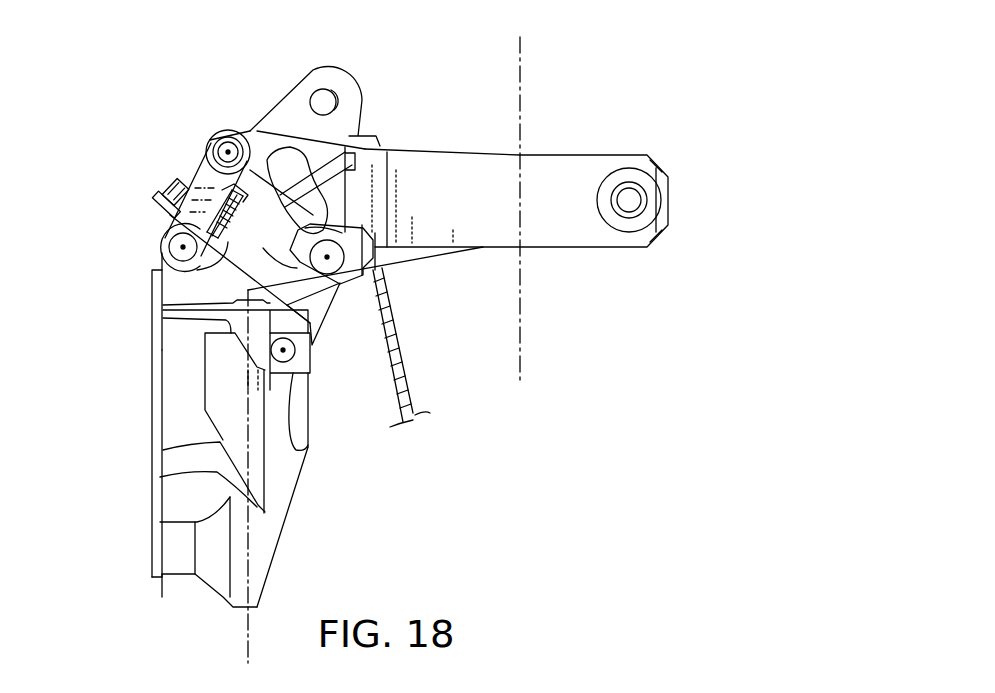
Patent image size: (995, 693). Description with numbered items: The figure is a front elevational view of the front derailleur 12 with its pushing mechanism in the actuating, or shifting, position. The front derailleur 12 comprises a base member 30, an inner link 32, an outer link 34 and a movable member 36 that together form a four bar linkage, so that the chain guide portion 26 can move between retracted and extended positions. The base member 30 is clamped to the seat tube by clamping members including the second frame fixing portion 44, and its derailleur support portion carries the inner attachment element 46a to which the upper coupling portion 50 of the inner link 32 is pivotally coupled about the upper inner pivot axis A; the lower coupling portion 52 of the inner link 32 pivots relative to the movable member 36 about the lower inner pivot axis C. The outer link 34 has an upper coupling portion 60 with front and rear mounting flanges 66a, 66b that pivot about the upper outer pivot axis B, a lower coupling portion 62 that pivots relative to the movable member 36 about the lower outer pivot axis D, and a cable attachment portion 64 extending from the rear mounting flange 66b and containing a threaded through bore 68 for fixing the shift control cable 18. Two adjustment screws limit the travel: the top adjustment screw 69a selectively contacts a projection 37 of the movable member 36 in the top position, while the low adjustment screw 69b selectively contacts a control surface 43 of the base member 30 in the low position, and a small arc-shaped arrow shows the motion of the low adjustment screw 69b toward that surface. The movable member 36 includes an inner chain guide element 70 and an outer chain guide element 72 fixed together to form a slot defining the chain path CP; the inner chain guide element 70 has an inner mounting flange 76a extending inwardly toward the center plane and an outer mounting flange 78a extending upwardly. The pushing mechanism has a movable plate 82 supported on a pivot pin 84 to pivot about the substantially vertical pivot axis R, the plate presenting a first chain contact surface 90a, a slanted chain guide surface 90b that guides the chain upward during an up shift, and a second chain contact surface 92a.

The front derailleur 12 is at (553, 97).
The shift control cable 18 is at (407, 357).
The chain guide portion 26 is at (273, 573).
The base member 30 is at (623, 138).
The inner link 32 is at (337, 337).
The outer link 34 is at (205, 145).
The movable member 36 is at (313, 478).
The projection 37 is at (165, 258).
The control surface 43 is at (305, 228).
The second frame fixing portion 44 is at (565, 218).
The inner attachment element 46a is at (243, 221).
The upper coupling portion 50 is at (346, 272).
The lower coupling portion 52 is at (313, 342).
The upper coupling portion 60 is at (222, 132).
The lower coupling portion 62 is at (170, 222).
The cable attachment portion 64 is at (310, 70).
The front mounting flange 66a is at (255, 128).
The rear mounting flange 66b is at (243, 125).
The threaded through bore 68 is at (333, 108).
The top adjustment screw 69a is at (155, 202).
The low adjustment screw 69b is at (177, 178).
The inner chain guide element 70 is at (265, 525).
The outer chain guide element 72 is at (157, 558).
The inner mounting flange 76a is at (300, 448).
The outer mounting flange 78a is at (183, 283).
The movable plate 82 is at (217, 487).
The pivot pin 84 is at (163, 300).
The first chain contact surface 90a is at (185, 446).
The slanted chain guide surface 90b is at (205, 478).
The second chain contact surface 92a is at (222, 367).
The upper inner pivot axis A is at (327, 257).
The upper outer pivot axis B is at (217, 143).
The lower inner pivot axis C is at (292, 357).
The lower outer pivot axis D is at (183, 247).
The chain path CP is at (180, 390).
The pivot axis R is at (247, 635).